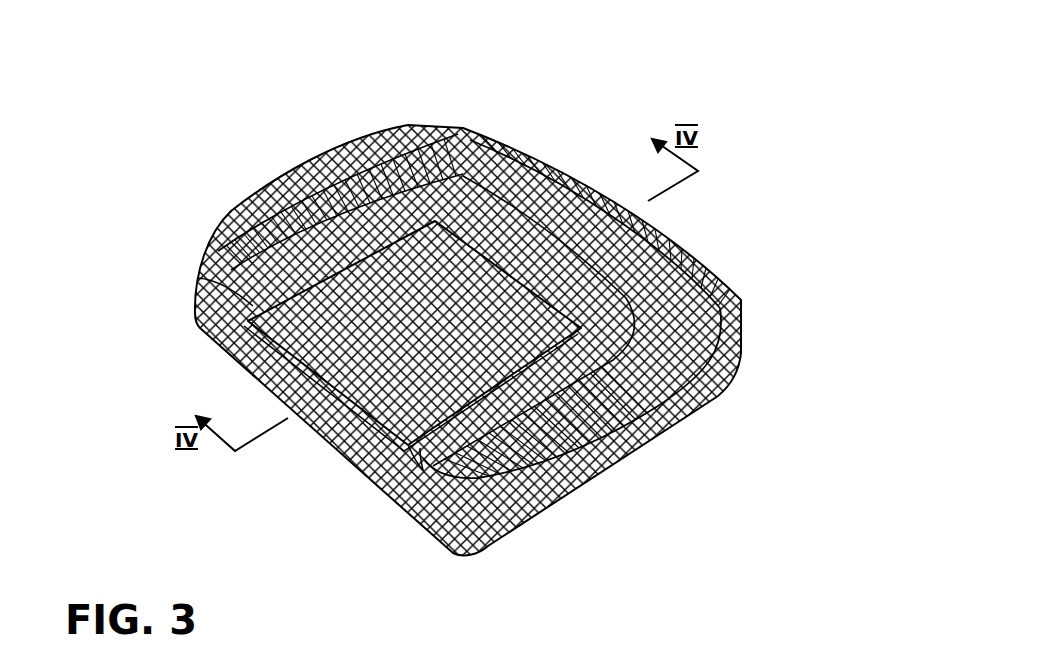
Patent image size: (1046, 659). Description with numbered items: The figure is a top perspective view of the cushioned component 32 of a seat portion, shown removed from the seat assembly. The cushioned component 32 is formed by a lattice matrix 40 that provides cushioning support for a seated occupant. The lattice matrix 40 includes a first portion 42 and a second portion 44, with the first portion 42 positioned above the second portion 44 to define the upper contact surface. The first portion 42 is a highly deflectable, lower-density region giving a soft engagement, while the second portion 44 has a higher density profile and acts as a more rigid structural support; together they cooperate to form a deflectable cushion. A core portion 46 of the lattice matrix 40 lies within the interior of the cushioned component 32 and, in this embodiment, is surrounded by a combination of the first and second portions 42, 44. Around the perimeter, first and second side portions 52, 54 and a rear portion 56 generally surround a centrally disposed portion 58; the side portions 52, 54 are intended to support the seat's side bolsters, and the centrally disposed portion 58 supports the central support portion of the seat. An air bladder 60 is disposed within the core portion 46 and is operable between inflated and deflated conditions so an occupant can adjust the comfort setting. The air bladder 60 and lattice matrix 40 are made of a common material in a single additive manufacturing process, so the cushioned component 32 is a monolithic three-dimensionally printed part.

The cushioned component 32 is at (290, 92).
The lattice matrix 40 is at (537, 118).
The first portion 42 is at (200, 248).
The second portion 44 is at (240, 303).
The core portion 46 is at (193, 285).
The first side portion 52 is at (278, 156).
The second side portion 54 is at (697, 390).
The rear portion 56 is at (687, 247).
The centrally disposed portion 58 is at (490, 133).
The air bladder 60 is at (410, 455).